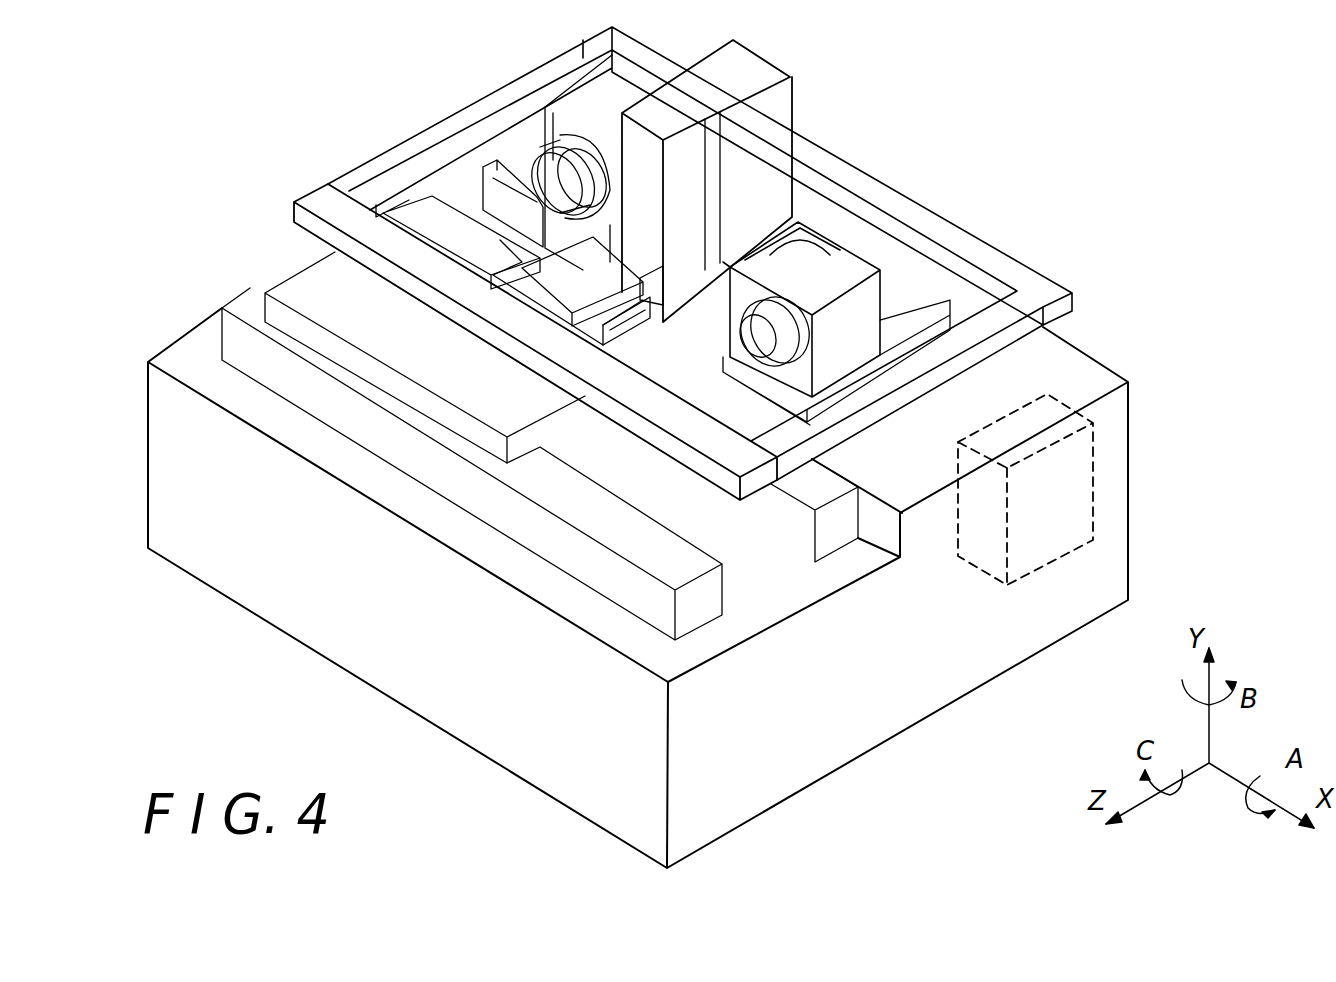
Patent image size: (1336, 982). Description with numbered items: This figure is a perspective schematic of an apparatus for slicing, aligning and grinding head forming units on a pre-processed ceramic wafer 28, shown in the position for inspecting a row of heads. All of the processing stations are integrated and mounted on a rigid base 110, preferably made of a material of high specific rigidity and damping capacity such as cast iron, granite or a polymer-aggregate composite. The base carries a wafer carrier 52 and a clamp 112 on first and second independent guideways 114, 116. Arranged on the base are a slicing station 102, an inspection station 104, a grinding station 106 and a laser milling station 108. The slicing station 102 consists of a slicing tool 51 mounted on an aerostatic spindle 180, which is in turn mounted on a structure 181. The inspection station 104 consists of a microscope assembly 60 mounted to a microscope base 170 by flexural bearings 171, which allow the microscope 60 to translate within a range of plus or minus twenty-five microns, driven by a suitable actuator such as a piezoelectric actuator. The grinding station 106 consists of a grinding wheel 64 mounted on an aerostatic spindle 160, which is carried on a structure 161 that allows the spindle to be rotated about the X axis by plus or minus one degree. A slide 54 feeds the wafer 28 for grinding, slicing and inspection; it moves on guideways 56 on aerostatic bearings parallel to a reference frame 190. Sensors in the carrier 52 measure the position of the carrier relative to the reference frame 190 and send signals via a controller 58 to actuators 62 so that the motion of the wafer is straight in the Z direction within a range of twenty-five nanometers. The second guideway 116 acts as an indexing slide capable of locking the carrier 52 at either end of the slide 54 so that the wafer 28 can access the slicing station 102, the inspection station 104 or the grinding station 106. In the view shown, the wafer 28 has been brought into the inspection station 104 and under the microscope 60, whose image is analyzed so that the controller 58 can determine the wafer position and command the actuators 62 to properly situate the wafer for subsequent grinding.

The ceramic wafer 28 is at (568, 291).
The slicing tool 51 is at (525, 142).
The wafer carrier 52 is at (513, 272).
The slide 54 is at (304, 280).
The guideways 56 is at (243, 306).
The controller 58 is at (1048, 392).
The microscope assembly 60 is at (688, 170).
The actuators 62 is at (668, 306).
The grinding wheel 64 is at (798, 336).
The slicing station 102 is at (428, 317).
The inspection station 104 is at (750, 25).
The grinding station 106 is at (903, 163).
The laser milling station 108 is at (806, 216).
The rigid base 110 is at (522, 686).
The clamp 112 is at (497, 195).
The first guideway 114 is at (826, 556).
The second guideway 116 is at (652, 312).
The aerostatic spindle 160 is at (807, 268).
The structure 161 is at (893, 313).
The microscope base 170 is at (770, 112).
The flexural bearings 171 is at (708, 122).
The aerostatic spindle 180 is at (575, 152).
The structure 181 is at (572, 150).
The reference frame 190 is at (318, 205).